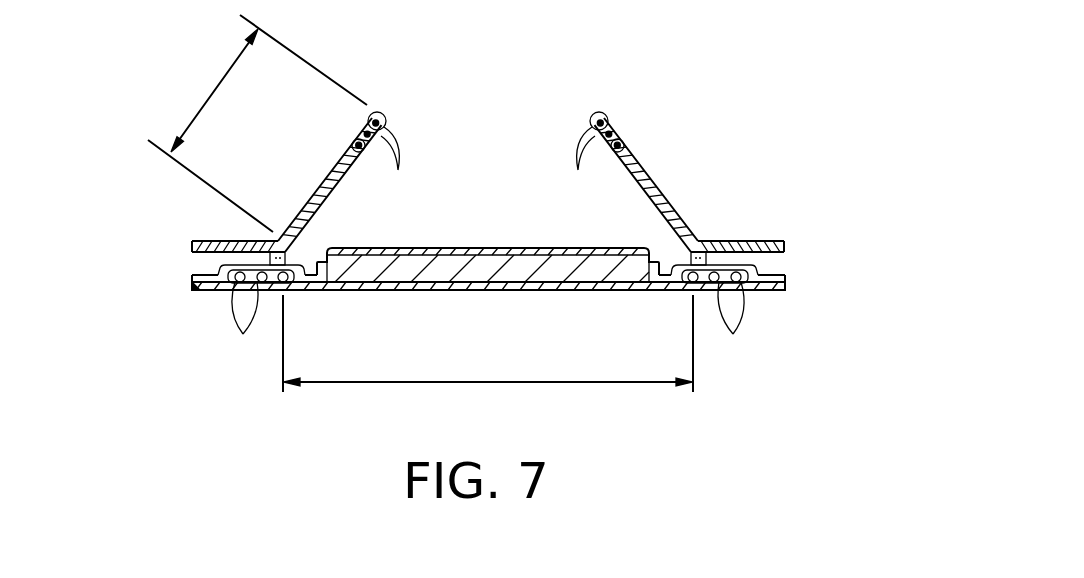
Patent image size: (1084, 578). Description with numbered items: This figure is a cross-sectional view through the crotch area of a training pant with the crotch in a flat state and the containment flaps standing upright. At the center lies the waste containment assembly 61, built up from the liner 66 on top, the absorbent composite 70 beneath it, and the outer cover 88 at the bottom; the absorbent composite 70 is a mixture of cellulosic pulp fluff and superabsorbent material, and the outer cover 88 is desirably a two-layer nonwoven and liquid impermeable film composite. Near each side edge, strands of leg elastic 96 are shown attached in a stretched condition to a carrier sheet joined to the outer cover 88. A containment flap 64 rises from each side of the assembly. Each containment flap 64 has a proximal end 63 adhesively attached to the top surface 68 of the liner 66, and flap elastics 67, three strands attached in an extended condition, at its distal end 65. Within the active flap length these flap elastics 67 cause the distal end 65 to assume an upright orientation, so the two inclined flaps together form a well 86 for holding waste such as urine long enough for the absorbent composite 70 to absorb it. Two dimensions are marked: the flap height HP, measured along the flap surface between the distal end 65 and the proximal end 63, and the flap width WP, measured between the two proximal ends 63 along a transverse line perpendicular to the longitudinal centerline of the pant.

The waste containment assembly 61 is at (524, 160).
The proximal end 63 is at (282, 240).
The containment flap 64 is at (336, 165).
The distal end 65 is at (378, 112).
The liner 66 is at (508, 248).
The flap elastics 67 is at (488, 163).
The top surface 68 is at (363, 247).
The absorbent composite 70 is at (546, 241).
The well 86 is at (587, 72).
The outer cover 88 is at (434, 292).
The leg elastic 96 is at (488, 316).
The flap height HP is at (216, 86).
The flap width WP is at (497, 383).